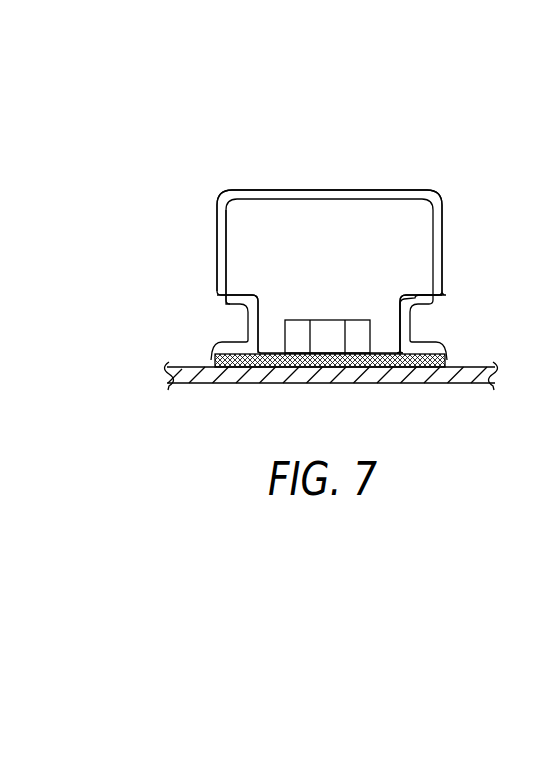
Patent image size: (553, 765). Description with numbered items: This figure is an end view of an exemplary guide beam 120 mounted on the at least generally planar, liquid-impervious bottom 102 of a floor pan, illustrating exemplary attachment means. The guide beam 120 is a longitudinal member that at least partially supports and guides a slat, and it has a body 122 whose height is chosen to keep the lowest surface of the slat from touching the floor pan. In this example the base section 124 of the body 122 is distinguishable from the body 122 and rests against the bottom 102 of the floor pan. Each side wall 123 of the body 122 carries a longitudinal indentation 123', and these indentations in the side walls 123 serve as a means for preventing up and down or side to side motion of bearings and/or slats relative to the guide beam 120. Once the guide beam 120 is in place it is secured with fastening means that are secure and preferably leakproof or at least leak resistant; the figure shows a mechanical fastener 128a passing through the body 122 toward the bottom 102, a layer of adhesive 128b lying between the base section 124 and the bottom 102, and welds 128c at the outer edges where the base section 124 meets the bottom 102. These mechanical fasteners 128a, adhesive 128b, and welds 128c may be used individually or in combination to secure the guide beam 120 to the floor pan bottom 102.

The bottom 102 is at (439, 385).
The guide beam 120 is at (443, 249).
The body 122 is at (384, 208).
The side wall 123 is at (187, 254).
The longitudinal indentation 123' is at (196, 317).
The base section 124 is at (417, 341).
The mechanical fastener 128a is at (297, 318).
The adhesive 128b is at (248, 370).
The weld 128c is at (213, 358).